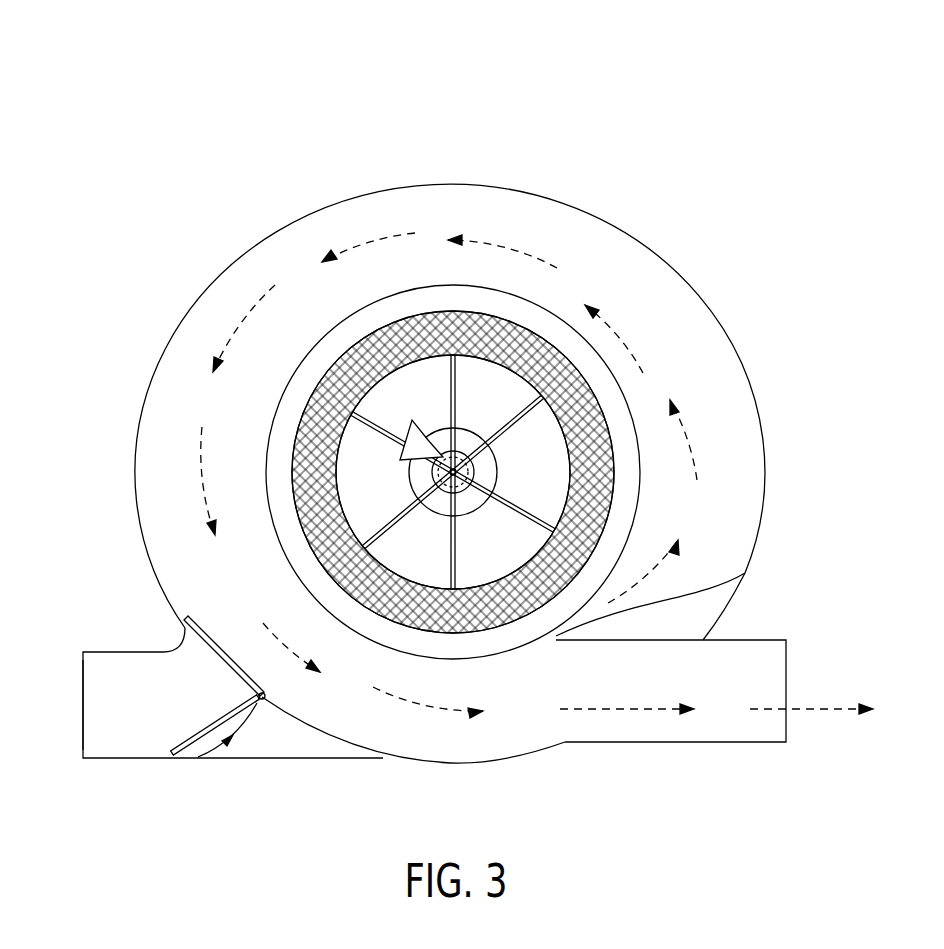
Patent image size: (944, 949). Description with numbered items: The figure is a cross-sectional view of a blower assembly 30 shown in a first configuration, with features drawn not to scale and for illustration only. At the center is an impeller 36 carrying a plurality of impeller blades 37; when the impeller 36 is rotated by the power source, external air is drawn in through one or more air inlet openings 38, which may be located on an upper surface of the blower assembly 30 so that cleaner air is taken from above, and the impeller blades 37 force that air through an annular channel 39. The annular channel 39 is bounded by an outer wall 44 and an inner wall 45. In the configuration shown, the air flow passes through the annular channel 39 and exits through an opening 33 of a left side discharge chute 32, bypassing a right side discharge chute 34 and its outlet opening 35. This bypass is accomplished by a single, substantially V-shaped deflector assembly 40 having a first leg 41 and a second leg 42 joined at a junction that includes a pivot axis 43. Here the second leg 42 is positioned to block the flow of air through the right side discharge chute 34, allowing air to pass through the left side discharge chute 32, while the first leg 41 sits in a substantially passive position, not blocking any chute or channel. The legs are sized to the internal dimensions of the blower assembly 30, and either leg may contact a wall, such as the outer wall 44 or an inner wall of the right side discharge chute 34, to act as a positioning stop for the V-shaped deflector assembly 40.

The blower assembly 30 is at (110, 97).
The left side discharge chute 32 is at (752, 640).
The opening 33 is at (787, 692).
The right side discharge chute 34 is at (112, 652).
The outlet opening 35 is at (83, 695).
The impeller 36 is at (440, 446).
The impeller blades 37 is at (458, 405).
The air inlet openings 38 is at (523, 350).
The annular channel 39 is at (702, 359).
The V-shaped deflector assembly 40 is at (238, 742).
The first leg 41 is at (198, 757).
The second leg 42 is at (217, 657).
The pivot axis 43 is at (266, 702).
The outer wall 44 is at (133, 412).
The inner wall 45 is at (265, 413).